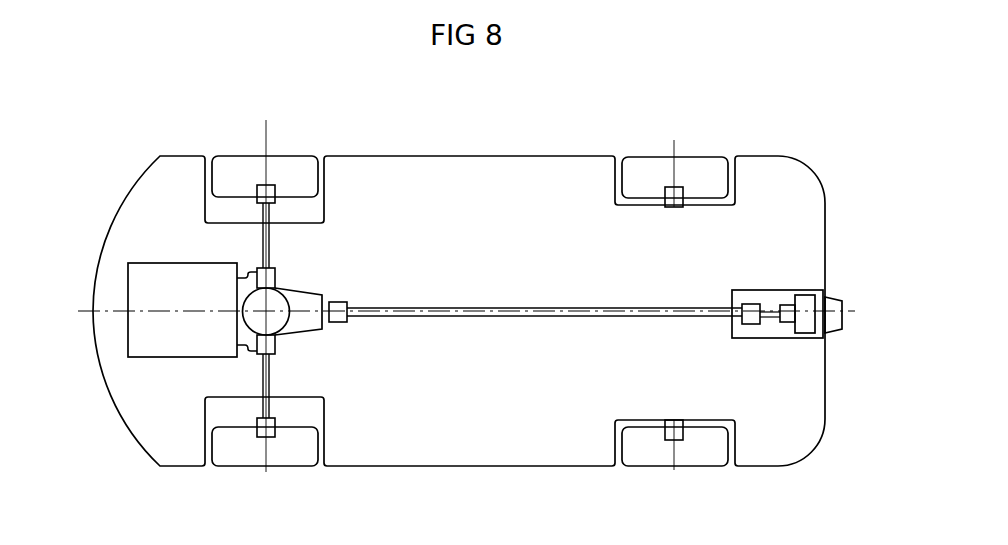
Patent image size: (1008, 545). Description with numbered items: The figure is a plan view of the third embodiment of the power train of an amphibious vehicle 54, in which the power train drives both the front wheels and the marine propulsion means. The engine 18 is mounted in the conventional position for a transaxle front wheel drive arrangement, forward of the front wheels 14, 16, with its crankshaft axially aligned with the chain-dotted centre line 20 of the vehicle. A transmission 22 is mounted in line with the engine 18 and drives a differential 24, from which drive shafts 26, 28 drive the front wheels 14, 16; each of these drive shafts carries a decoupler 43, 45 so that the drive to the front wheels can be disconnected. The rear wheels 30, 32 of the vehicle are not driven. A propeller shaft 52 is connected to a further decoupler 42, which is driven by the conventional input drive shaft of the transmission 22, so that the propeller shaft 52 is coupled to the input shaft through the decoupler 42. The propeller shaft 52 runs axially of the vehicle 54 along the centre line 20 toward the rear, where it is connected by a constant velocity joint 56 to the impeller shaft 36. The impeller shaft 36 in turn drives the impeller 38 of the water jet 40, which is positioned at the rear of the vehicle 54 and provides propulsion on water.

The front wheel 14 is at (243, 173).
The front wheel 16 is at (245, 457).
The engine 18 is at (148, 282).
The centre line 20 is at (110, 311).
The transmission 22 is at (308, 300).
The differential 24 is at (270, 305).
The drive shaft 26 is at (262, 237).
The drive shaft 28 is at (262, 378).
The rear wheel 30 is at (650, 178).
The rear wheel 32 is at (690, 448).
The impeller shaft 36 is at (778, 318).
The impeller 38 is at (807, 303).
The water jet 40 is at (773, 298).
The decoupler 42 is at (340, 303).
The decoupler 43 is at (256, 268).
The decoupler 45 is at (256, 354).
The propeller shaft 52 is at (399, 309).
The amphibious vehicle 54 is at (489, 279).
The constant velocity joint 56 is at (750, 318).